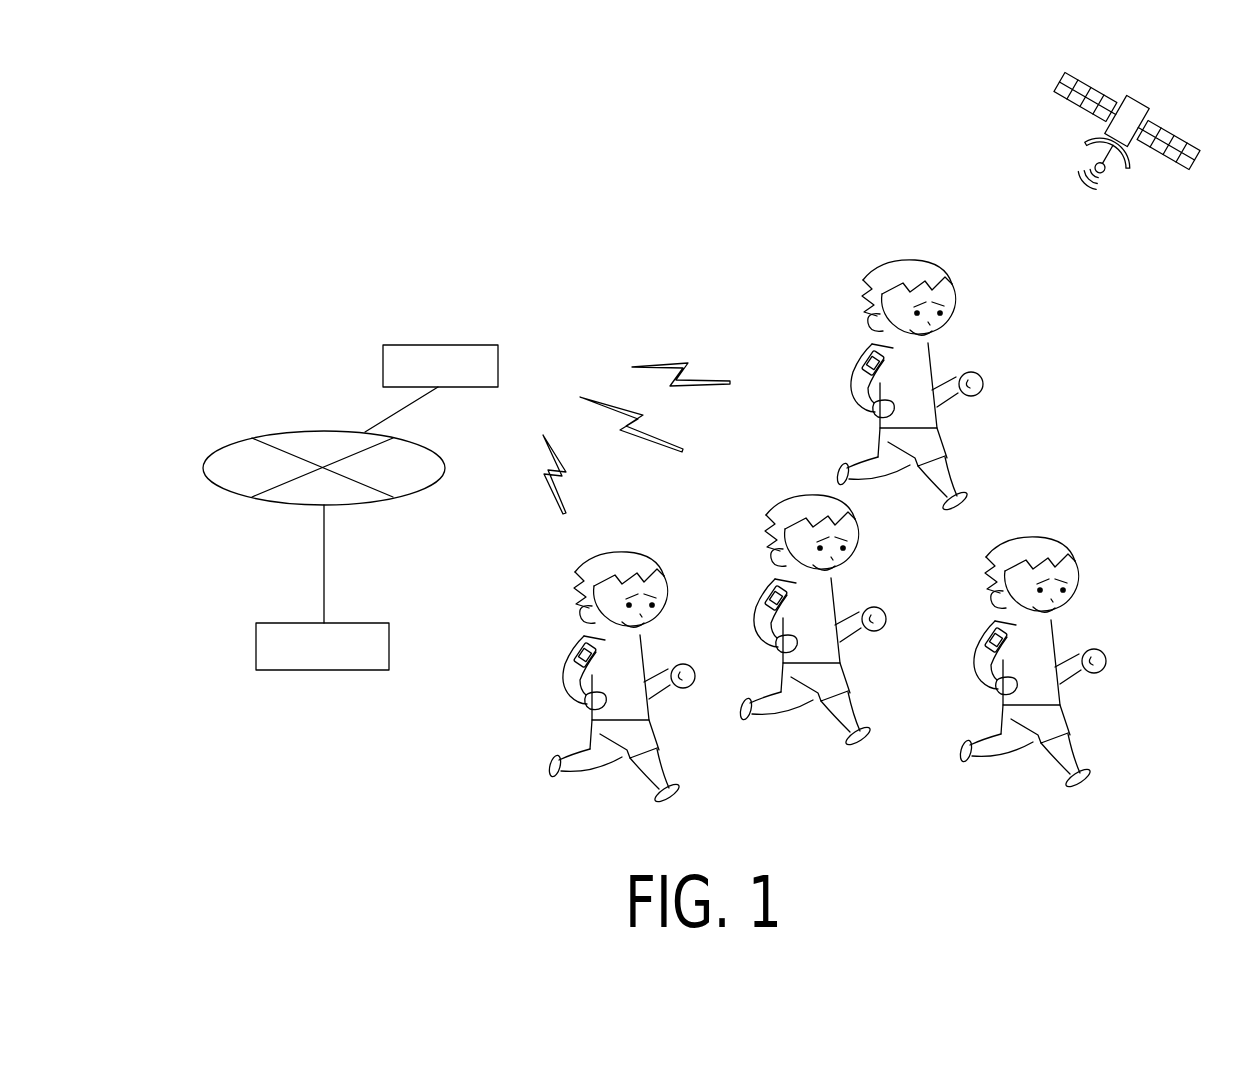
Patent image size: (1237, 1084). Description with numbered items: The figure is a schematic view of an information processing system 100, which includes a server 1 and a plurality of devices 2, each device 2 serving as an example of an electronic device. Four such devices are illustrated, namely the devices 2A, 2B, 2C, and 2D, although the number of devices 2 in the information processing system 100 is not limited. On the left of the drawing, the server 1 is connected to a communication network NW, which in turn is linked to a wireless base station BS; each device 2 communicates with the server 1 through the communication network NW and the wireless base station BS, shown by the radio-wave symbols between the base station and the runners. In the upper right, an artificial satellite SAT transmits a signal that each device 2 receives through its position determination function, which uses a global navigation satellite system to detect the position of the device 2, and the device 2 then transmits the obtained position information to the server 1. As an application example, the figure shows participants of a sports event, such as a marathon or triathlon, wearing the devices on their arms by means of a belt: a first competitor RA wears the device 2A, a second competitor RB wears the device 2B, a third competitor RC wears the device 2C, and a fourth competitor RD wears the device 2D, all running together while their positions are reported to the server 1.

The information processing system 100 is at (428, 247).
The server 1 is at (392, 649).
The device 2 is at (739, 594).
The device 2A is at (763, 593).
The device 2B is at (985, 636).
The device 2C is at (574, 654).
The device 2D is at (862, 360).
The wireless base station BS is at (383, 368).
The communication network NW is at (262, 434).
The artificial satellite SAT is at (1052, 90).
The first competitor RA is at (788, 608).
The second competitor RB is at (1006, 651).
The third competitor RC is at (596, 666).
The fourth competitor RD is at (884, 373).